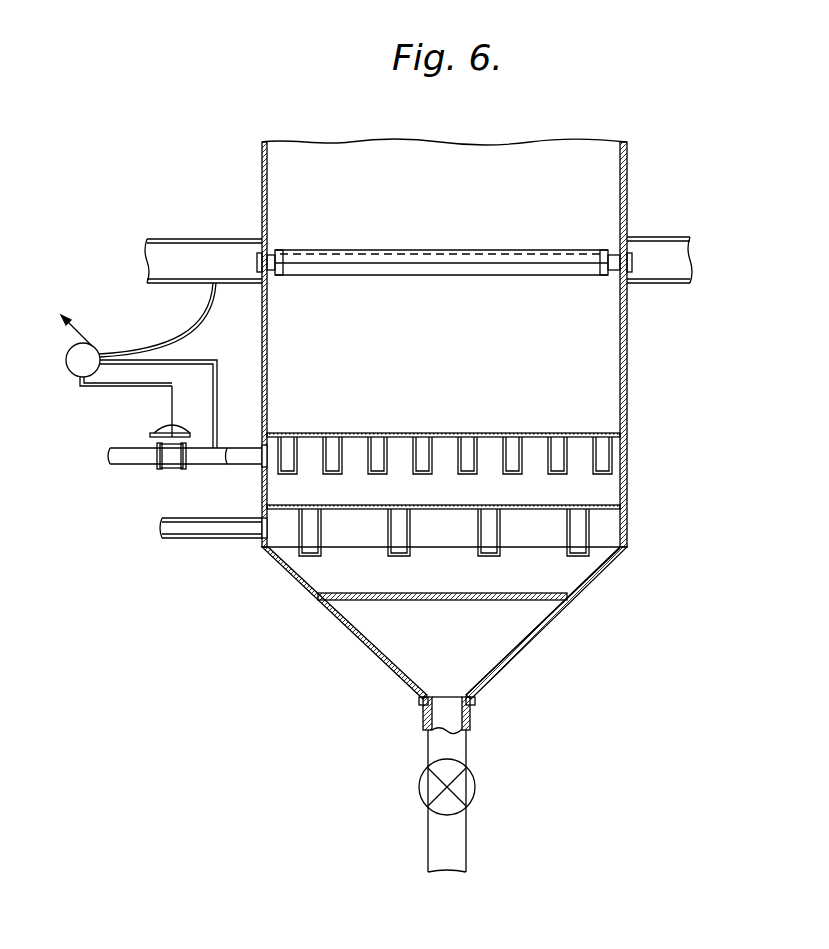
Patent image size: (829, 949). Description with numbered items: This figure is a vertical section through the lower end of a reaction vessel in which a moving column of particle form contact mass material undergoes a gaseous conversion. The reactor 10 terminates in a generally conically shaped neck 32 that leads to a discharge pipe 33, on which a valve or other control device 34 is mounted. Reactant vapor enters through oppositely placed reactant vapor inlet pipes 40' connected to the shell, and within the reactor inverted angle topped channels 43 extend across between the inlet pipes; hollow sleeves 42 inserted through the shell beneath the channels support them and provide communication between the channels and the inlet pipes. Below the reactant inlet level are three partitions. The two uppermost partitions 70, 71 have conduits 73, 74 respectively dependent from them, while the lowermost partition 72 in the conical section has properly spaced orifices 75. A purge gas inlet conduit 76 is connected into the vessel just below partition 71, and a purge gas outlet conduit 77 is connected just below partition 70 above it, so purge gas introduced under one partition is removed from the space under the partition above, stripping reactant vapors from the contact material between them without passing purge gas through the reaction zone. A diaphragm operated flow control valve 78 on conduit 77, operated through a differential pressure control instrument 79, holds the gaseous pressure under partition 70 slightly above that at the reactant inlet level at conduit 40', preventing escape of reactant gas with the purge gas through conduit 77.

The reactor 10 is at (258, 165).
The conically shaped neck 32 is at (356, 641).
The discharge pipe 33 is at (428, 745).
The valve 34 is at (419, 787).
The reactant vapor inlet pipe 40' is at (418, 243).
The hollow sleeve 42 is at (257, 256).
The inverted angle topped channel 43 is at (578, 250).
The partition 70 is at (582, 433).
The partition 71 is at (605, 505).
The lowermost partition 72 is at (560, 595).
The conduit 73 is at (612, 458).
The conduit 74 is at (590, 532).
The orifice 75 is at (555, 600).
The purge gas inlet conduit 76 is at (198, 518).
The purge gas outlet conduit 77 is at (252, 436).
The diaphragm operated flow control valve 78 is at (163, 451).
The differential pressure control instrument 79 is at (66, 362).